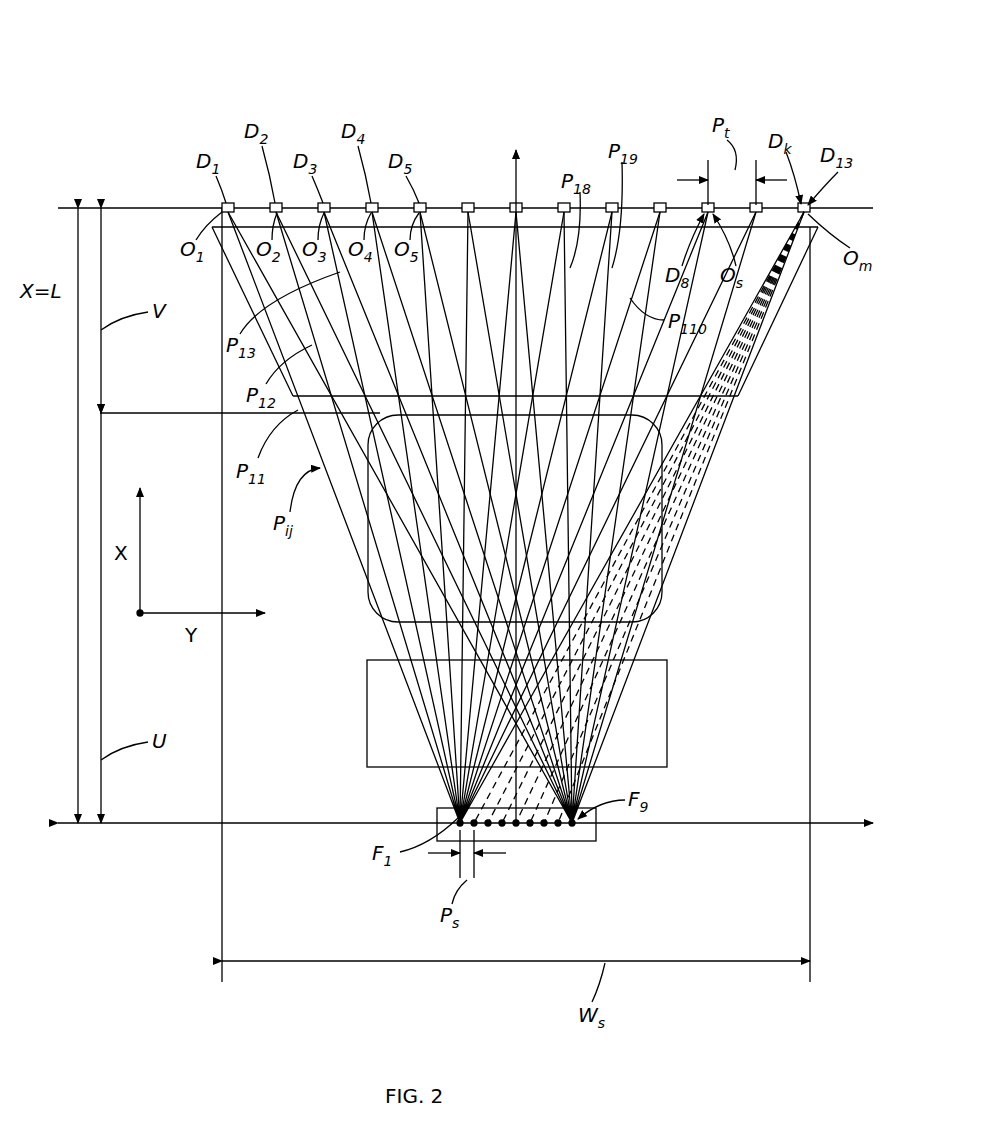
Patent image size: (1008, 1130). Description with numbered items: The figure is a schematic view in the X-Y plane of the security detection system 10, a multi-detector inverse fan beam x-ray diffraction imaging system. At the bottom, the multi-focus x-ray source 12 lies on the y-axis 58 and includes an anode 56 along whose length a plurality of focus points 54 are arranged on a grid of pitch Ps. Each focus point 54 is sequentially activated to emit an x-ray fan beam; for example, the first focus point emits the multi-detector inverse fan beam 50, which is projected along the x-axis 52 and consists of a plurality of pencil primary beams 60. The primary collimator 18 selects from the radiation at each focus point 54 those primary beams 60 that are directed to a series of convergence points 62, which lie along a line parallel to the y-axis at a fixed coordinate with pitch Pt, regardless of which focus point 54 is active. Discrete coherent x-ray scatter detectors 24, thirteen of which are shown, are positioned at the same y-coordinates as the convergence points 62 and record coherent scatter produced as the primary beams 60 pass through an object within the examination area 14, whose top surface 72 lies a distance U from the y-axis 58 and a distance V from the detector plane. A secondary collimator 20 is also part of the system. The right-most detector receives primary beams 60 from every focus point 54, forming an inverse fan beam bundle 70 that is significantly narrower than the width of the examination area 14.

The security detection system 10 is at (150, 46).
The multi-focus x-ray source 12 is at (596, 832).
The examination area 14 is at (662, 600).
The primary collimator 18 is at (667, 752).
The secondary collimator 20 is at (790, 275).
The coherent x-ray scatter detectors 24 is at (516, 195).
The multi-detector inverse fan beam 50 is at (430, 748).
The x-axis 52 is at (522, 168).
The focus points 54 is at (529, 868).
The anode 56 is at (516, 828).
The y-axis 58 is at (820, 826).
The primary beams 60 is at (415, 592).
The convergence points 62 is at (467, 213).
The inverse fan beam bundle 70 is at (588, 355).
The top surface 72 is at (617, 406).